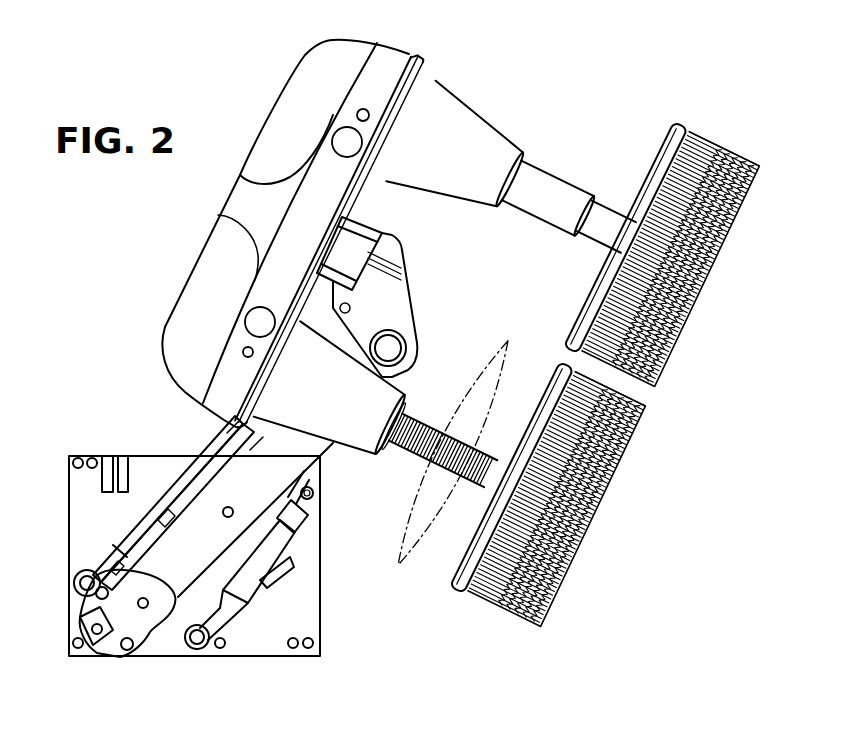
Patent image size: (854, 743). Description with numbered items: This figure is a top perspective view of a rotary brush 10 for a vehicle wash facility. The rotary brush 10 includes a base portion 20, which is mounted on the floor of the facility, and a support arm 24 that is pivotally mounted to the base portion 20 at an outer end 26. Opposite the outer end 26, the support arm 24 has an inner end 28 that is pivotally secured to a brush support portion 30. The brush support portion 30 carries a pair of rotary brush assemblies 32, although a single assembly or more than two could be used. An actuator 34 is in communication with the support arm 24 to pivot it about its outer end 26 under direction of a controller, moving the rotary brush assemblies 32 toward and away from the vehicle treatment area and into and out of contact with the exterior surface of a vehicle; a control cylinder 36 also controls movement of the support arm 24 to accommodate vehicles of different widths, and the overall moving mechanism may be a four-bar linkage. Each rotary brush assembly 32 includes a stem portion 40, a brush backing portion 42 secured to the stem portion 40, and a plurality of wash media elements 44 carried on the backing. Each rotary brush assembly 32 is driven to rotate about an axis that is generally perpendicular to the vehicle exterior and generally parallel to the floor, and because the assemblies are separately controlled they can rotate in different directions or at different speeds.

The rotary brush 10 is at (322, 33).
The base portion 20 is at (258, 640).
The support arm 24 is at (283, 567).
The outer end 26 is at (178, 597).
The inner end 28 is at (410, 357).
The brush support portion 30 is at (403, 60).
The rotary brush assembly 32 is at (636, 121).
The actuator 34 is at (215, 475).
The control cylinder 36 is at (170, 500).
The stem portion 40 is at (543, 187).
The brush backing portion 42 is at (690, 126).
The wash media elements 44 is at (688, 338).